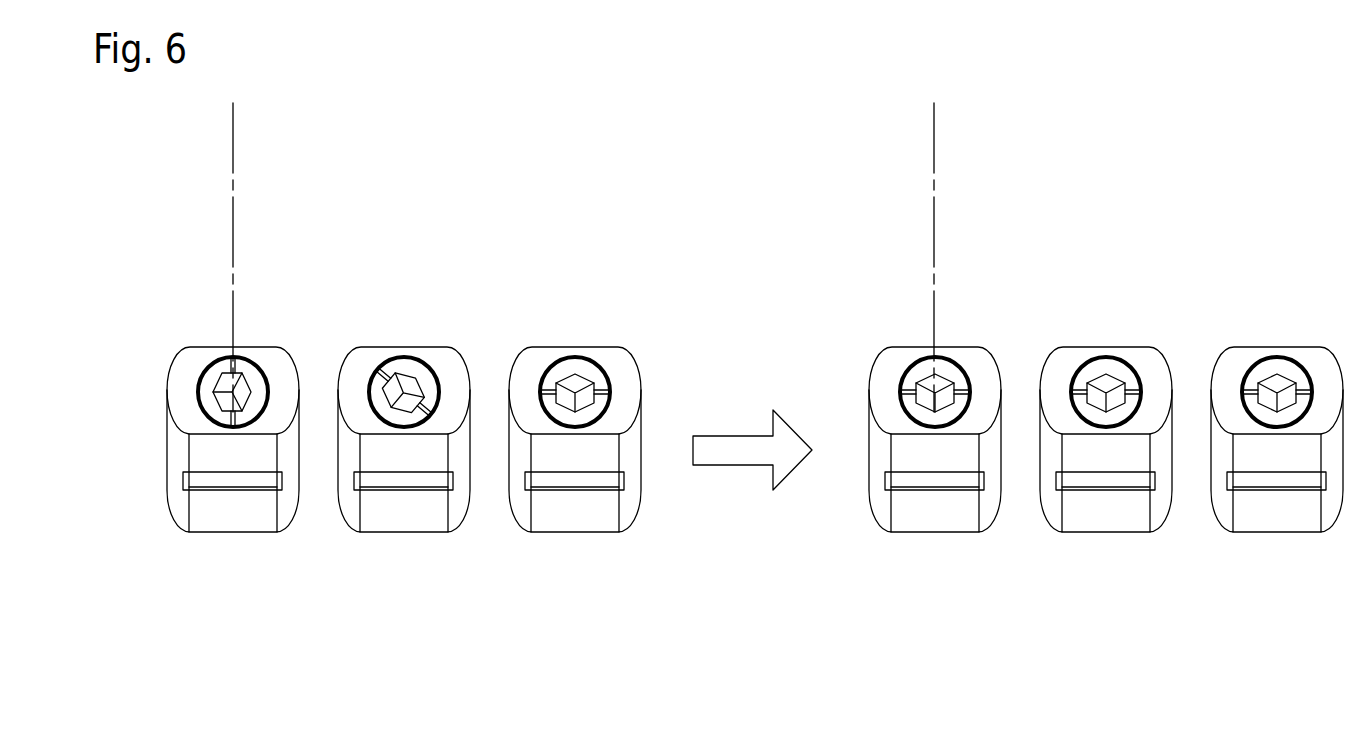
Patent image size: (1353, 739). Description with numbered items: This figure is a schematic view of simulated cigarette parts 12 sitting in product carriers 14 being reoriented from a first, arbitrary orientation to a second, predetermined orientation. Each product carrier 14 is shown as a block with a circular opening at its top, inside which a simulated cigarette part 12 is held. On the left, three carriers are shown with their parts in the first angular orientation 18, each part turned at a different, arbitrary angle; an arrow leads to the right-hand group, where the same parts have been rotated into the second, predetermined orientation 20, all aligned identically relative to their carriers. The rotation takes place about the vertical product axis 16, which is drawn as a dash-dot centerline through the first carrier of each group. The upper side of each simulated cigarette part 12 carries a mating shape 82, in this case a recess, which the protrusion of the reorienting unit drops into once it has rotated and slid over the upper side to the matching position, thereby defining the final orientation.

The simulated cigarette part 12 is at (402, 415).
The product carrier 14 is at (230, 510).
The vertical product axis 16 is at (233, 163).
The first angular orientation 18 is at (217, 388).
The second, predetermined orientation 20 is at (925, 383).
The mating shape 82 is at (385, 372).